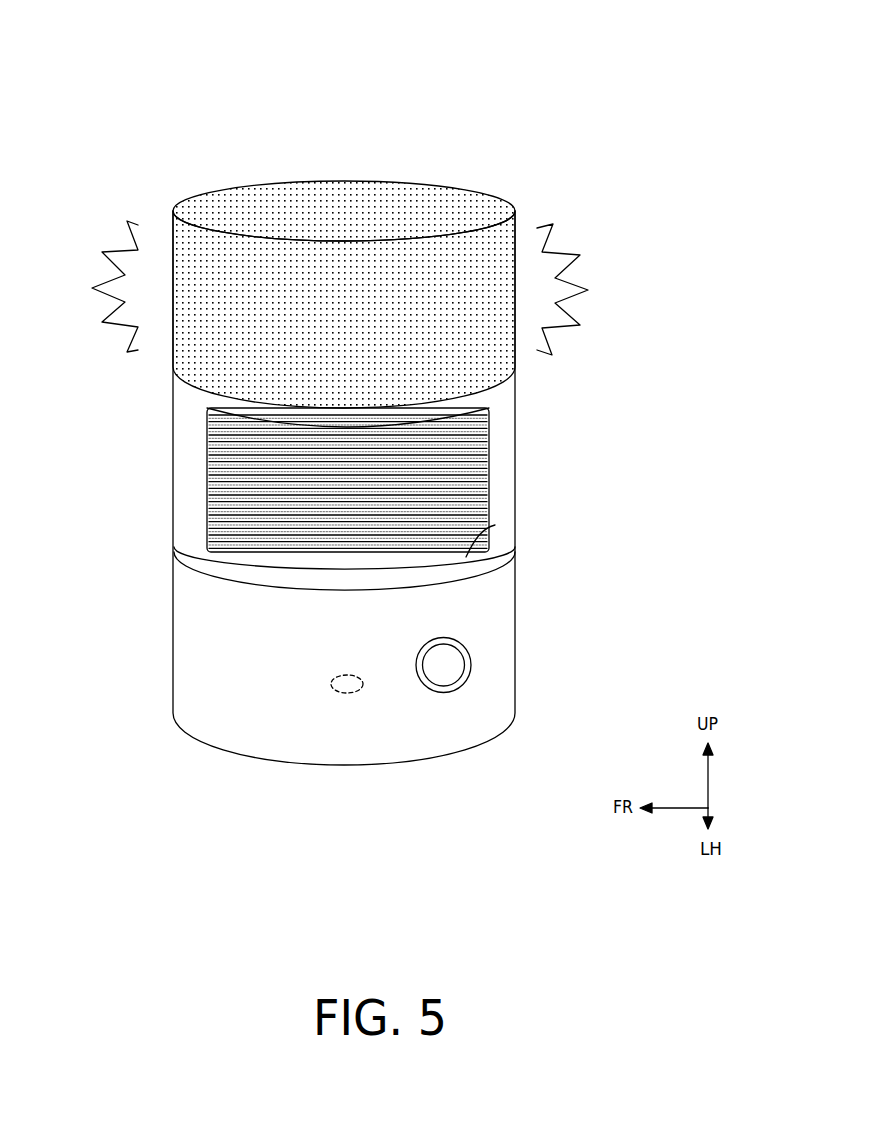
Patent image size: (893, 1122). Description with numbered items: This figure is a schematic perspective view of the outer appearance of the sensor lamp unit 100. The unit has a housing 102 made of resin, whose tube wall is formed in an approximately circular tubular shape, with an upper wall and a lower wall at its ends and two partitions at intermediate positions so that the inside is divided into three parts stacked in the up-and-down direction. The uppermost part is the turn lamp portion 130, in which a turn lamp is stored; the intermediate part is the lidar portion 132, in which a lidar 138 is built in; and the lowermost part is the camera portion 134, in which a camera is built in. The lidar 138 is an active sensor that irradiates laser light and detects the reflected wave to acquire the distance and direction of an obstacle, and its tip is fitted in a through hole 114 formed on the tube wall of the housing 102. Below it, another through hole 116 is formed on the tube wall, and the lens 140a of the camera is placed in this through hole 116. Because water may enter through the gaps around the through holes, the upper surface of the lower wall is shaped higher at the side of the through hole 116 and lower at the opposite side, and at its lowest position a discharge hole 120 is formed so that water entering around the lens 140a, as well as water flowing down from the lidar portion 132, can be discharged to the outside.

The sensor lamp unit 100 is at (379, 390).
The housing 102 is at (264, 179).
The turn lamp portion 130 is at (515, 253).
The lidar portion 132 is at (515, 438).
The lidar 138 is at (489, 485).
The through hole 114 is at (495, 525).
The camera portion 134 is at (517, 593).
The lens 140a is at (458, 648).
The through hole 116 is at (445, 690).
The discharge hole 120 is at (328, 684).